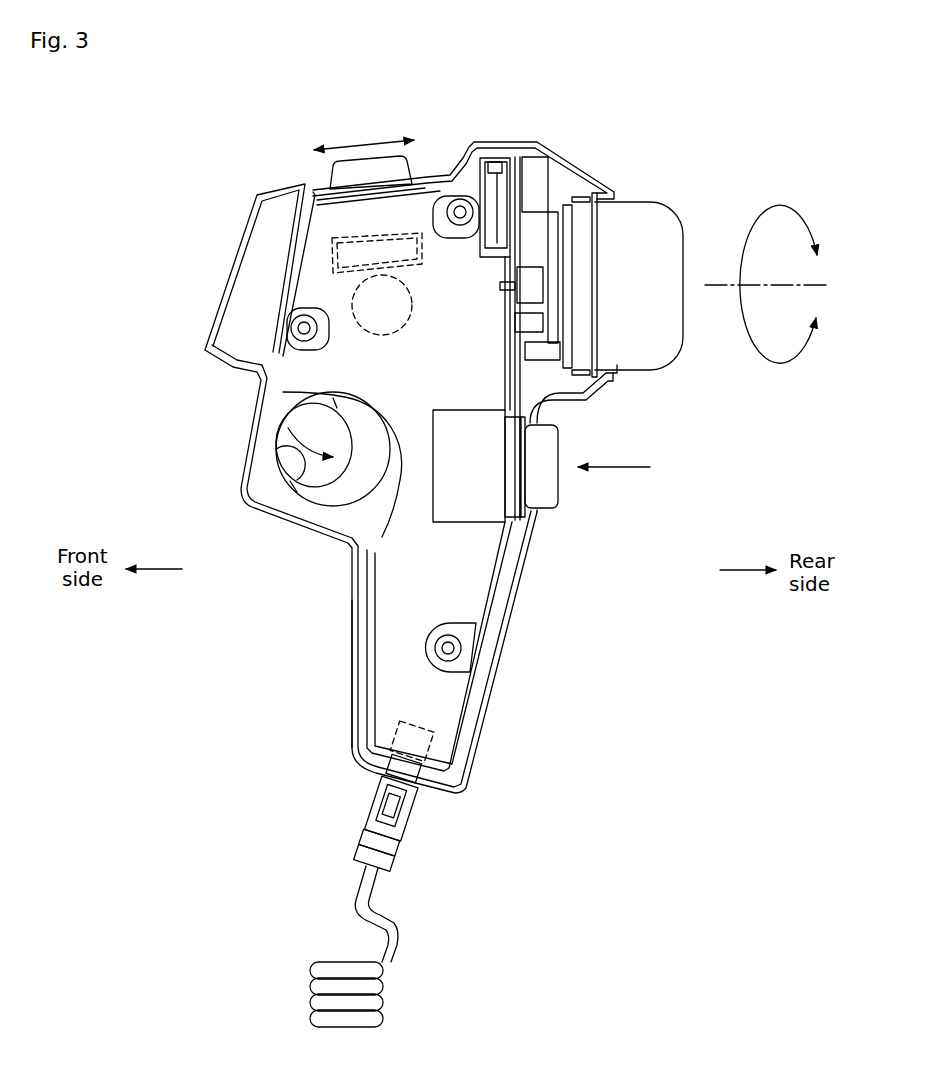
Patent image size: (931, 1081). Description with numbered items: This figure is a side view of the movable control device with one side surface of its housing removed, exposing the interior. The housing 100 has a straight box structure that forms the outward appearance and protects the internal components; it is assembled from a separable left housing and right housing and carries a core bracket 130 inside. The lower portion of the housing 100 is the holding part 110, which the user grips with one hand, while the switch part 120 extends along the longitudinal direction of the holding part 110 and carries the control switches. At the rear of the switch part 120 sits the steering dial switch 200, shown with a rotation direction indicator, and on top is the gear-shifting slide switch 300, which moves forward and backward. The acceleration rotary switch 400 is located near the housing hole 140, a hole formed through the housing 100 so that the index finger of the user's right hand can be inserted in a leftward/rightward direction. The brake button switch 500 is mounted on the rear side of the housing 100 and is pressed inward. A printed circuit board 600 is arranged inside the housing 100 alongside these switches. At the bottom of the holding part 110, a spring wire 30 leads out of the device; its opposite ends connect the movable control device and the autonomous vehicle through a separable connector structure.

The housing 100 is at (200, 330).
The holding part 110 is at (352, 680).
The switch part 120 is at (238, 266).
The core bracket 130 is at (288, 387).
The housing hole 140 is at (297, 482).
The steering dial switch 200 is at (641, 214).
The gear-shifting slide switch 300 is at (342, 173).
The acceleration rotary switch 400 is at (343, 492).
The brake button switch 500 is at (553, 493).
The printed circuit board 600 is at (463, 580).
The spring wire 30 is at (370, 987).